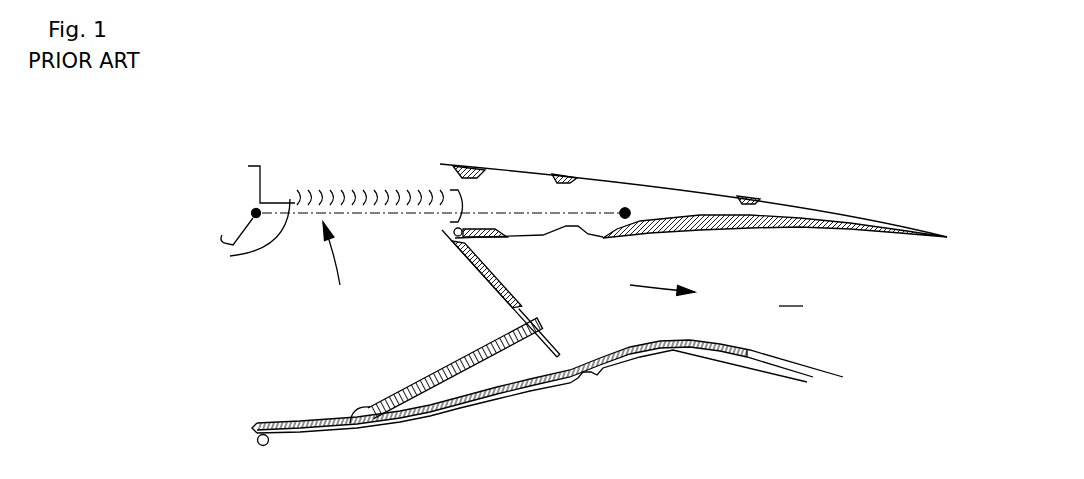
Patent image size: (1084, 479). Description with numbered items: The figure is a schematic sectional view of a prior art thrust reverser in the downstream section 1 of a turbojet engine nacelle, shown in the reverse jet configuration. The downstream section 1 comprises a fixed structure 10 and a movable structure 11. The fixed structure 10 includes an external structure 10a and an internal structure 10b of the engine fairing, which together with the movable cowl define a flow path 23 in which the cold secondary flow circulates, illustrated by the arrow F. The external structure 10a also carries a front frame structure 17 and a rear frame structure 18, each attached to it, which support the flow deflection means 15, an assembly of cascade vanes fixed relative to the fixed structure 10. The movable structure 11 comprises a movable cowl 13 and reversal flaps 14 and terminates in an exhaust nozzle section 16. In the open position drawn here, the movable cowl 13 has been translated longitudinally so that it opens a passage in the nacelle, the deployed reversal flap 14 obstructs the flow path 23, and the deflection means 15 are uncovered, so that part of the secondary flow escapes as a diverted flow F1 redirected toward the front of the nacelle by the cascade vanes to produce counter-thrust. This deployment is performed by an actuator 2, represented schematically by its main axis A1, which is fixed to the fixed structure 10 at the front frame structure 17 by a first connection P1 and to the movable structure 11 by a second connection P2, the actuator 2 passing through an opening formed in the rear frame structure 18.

The downstream section 1 is at (212, 137).
The fixed structure 10 is at (205, 315).
The external structure 10a is at (235, 216).
The internal structure 10b is at (262, 415).
The movable structure 11 is at (738, 140).
The movable cowl 13 is at (525, 168).
The reversal flaps 14 is at (480, 277).
The flow deflection means 15 is at (357, 190).
The exhaust nozzle section 16 is at (808, 208).
The front frame structure 17 is at (280, 203).
The rear frame structure 18 is at (458, 203).
The actuator 2 is at (601, 172).
The main axis of the actuator A1 is at (577, 213).
The first connection P1 is at (252, 210).
The second connection P2 is at (627, 208).
The secondary flow F is at (655, 284).
The diverted flow F1 is at (337, 266).
The flow path 23 is at (791, 294).